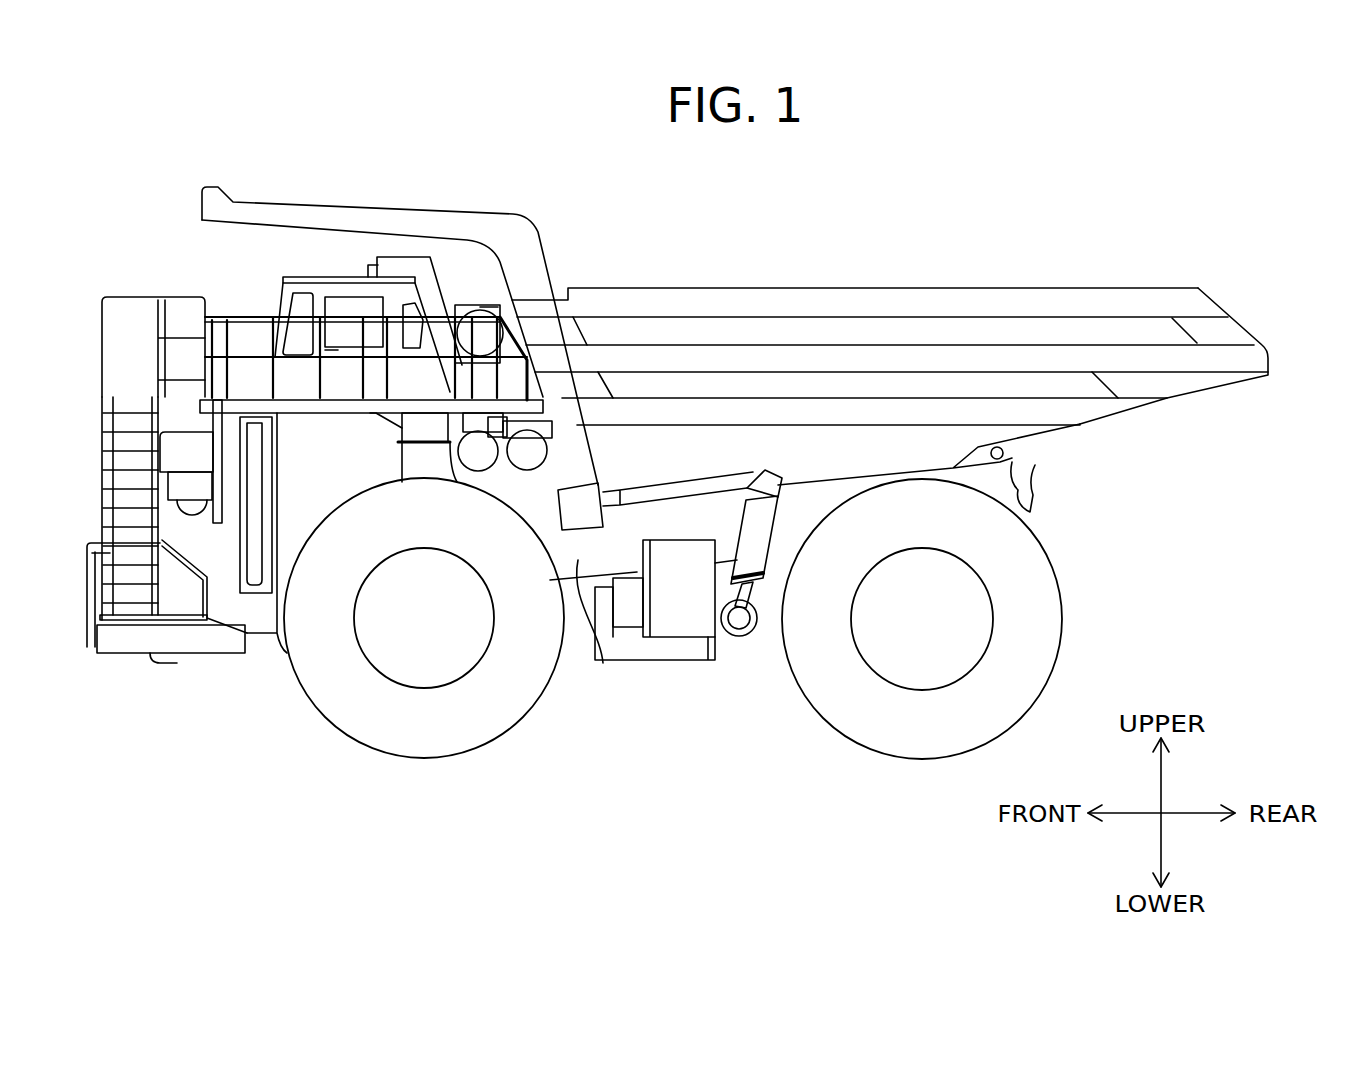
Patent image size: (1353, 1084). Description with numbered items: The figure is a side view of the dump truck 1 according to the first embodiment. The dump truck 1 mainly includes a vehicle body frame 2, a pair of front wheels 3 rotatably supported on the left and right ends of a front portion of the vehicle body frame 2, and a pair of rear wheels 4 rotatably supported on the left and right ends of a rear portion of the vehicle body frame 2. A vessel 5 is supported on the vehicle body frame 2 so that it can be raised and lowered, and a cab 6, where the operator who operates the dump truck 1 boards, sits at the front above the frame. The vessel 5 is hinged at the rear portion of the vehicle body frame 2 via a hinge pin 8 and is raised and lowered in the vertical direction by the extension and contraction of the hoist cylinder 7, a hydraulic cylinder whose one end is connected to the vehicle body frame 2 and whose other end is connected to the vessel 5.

The dump truck 1 is at (1128, 200).
The vehicle body frame 2 is at (603, 663).
The front wheels 3 is at (415, 758).
The rear wheels 4 is at (977, 758).
The vessel 5 is at (490, 212).
The cab 6 is at (298, 277).
The hoist cylinder 7 is at (780, 600).
The hinge pin 8 is at (1003, 453).